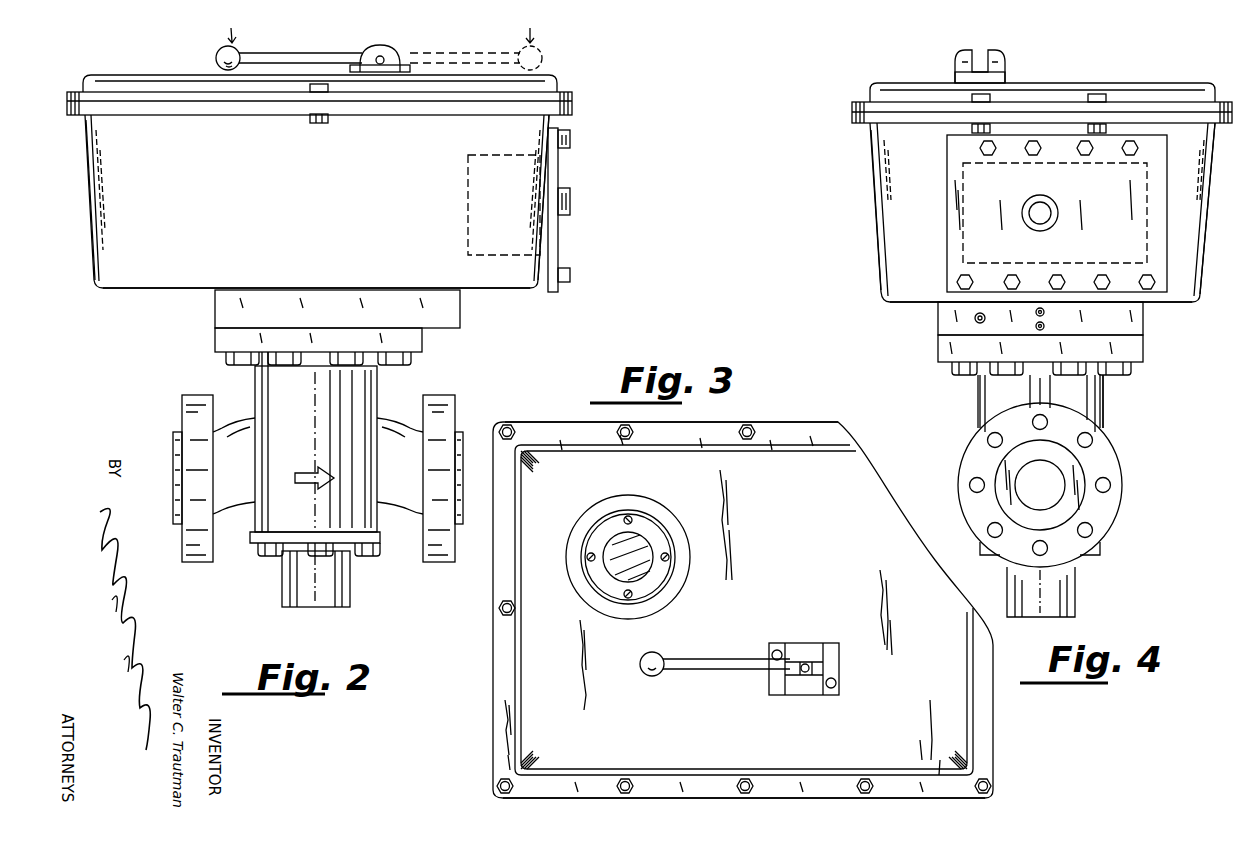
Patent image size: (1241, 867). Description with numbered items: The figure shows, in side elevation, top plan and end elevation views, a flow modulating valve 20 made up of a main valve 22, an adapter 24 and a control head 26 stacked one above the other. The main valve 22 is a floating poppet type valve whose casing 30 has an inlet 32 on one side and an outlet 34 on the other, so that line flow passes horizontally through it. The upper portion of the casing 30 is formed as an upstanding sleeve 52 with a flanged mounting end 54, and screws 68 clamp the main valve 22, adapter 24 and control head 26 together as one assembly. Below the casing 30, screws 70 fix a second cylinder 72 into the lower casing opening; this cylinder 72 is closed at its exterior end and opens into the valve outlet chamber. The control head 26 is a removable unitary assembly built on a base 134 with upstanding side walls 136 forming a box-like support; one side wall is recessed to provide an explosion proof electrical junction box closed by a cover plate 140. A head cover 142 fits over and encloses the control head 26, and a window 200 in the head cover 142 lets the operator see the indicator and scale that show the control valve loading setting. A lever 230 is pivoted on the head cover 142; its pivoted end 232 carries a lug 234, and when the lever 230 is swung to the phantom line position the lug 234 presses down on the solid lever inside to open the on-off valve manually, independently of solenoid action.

In FIG. 2, the flow modulating valve 20 is at (580, 251).
In FIG. 3, the flow modulating valve 20 is at (792, 418).
In FIG. 4, the flow modulating valve 20 is at (840, 165).
In FIG. 2, the main valve 22 is at (412, 400).
In FIG. 4, the main valve 22 is at (1115, 407).
In FIG. 2, the adapter 24 is at (460, 316).
In FIG. 4, the adapter 24 is at (938, 322).
In FIG. 2, the control head 26 is at (527, 294).
In FIG. 3, the control head 26 is at (572, 432).
In FIG. 4, the control head 26 is at (879, 290).
In FIG. 2, the casing 30 is at (262, 404).
In FIG. 4, the casing 30 is at (1104, 412).
In FIG. 2, the inlet 32 is at (181, 456).
In FIG. 2, the outlet 34 is at (458, 478).
In FIG. 4, the outlet 34 is at (1080, 497).
In FIG. 2, the upstanding sleeve 52 is at (257, 374).
In FIG. 4, the upstanding sleeve 52 is at (978, 397).
In FIG. 2, the flanged mounting end 54 is at (214, 338).
In FIG. 4, the flanged mounting end 54 is at (940, 348).
In FIG. 2, the screws 68 is at (226, 358).
In FIG. 4, the screws 68 is at (950, 370).
In FIG. 2, the screws 70 is at (264, 551).
In FIG. 2, the second cylinder 72 is at (305, 590).
In FIG. 4, the second cylinder 72 is at (1076, 590).
In FIG. 2, the base 134 is at (151, 292).
In FIG. 4, the base 134 is at (890, 305).
In FIG. 2, the side walls 136 is at (92, 230).
In FIG. 4, the side walls 136 is at (878, 210).
In FIG. 2, the cover plate 140 is at (559, 170).
In FIG. 4, the cover plate 140 is at (1166, 212).
In FIG. 2, the head cover 142 is at (140, 82).
In FIG. 3, the head cover 142 is at (570, 776).
In FIG. 4, the head cover 142 is at (888, 92).
In FIG. 3, the window 200 is at (638, 552).
In FIG. 2, the lever 230 is at (330, 53).
In FIG. 3, the lever 230 is at (737, 660).
In FIG. 2, the pivoted end 232 is at (380, 58).
In FIG. 3, the pivoted end 232 is at (786, 652).
In FIG. 4, the pivoted end 232 is at (988, 62).
In FIG. 3, the lug 234 is at (807, 664).